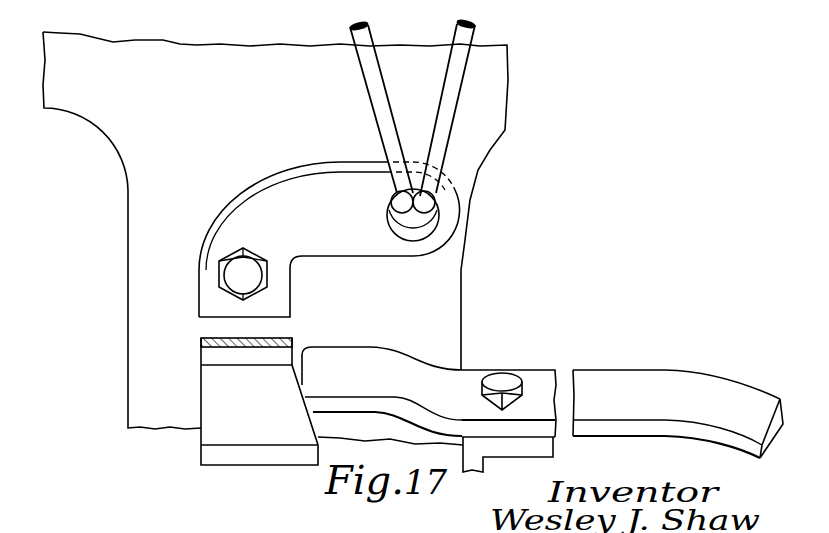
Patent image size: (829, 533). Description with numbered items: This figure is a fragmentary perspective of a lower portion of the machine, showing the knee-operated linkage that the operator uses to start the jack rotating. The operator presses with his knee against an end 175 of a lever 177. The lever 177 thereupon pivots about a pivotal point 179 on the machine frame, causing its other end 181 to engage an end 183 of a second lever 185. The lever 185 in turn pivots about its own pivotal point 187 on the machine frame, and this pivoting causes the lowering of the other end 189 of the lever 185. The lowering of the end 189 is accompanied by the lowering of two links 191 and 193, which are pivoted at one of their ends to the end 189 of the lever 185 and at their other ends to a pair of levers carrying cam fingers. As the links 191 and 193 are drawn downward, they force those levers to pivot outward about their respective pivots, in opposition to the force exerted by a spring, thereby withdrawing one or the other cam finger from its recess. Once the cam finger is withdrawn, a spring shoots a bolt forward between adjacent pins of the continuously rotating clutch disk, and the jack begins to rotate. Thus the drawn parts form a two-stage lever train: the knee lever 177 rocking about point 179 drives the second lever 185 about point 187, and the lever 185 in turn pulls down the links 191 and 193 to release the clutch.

The end of lever 175 is at (698, 387).
The lever 177 is at (540, 378).
The pivotal point 179 is at (500, 376).
The other end of lever 181 is at (323, 363).
The end of lever 183 is at (290, 432).
The lever 185 is at (220, 228).
The pivotal point 187 is at (263, 262).
The other end of lever 189 is at (448, 227).
The link 191 is at (453, 82).
The link 193 is at (358, 53).